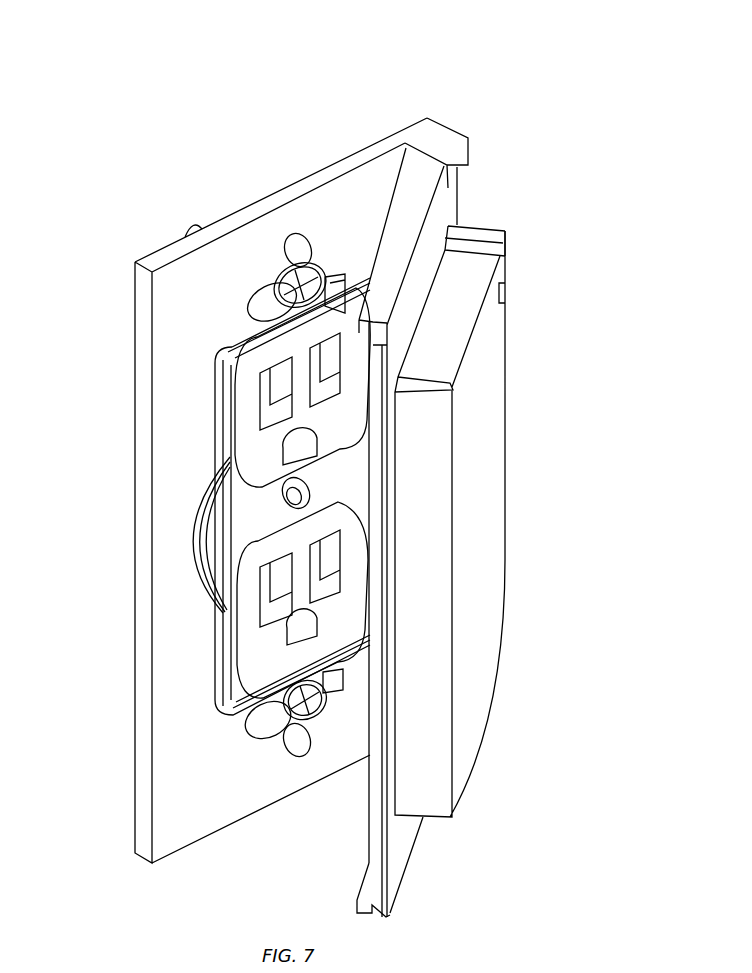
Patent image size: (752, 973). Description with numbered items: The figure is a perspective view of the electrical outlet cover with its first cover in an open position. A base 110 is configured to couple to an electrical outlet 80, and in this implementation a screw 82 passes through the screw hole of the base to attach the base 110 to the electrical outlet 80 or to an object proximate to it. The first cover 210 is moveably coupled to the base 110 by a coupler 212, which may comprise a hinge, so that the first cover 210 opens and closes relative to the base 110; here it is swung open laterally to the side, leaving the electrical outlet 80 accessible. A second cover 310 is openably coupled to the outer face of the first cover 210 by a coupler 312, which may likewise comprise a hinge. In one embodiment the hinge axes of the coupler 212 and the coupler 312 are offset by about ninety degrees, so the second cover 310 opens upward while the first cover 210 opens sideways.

The base 110 is at (270, 207).
The electrical outlet 80 is at (252, 445).
The screw 82 is at (268, 297).
The first cover 210 is at (410, 215).
The coupler 212 is at (445, 140).
The second cover 310 is at (480, 350).
The coupler 312 is at (488, 237).